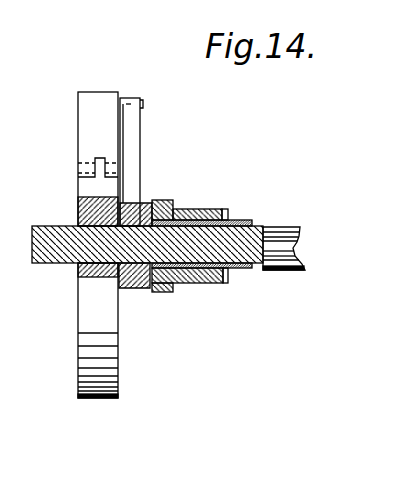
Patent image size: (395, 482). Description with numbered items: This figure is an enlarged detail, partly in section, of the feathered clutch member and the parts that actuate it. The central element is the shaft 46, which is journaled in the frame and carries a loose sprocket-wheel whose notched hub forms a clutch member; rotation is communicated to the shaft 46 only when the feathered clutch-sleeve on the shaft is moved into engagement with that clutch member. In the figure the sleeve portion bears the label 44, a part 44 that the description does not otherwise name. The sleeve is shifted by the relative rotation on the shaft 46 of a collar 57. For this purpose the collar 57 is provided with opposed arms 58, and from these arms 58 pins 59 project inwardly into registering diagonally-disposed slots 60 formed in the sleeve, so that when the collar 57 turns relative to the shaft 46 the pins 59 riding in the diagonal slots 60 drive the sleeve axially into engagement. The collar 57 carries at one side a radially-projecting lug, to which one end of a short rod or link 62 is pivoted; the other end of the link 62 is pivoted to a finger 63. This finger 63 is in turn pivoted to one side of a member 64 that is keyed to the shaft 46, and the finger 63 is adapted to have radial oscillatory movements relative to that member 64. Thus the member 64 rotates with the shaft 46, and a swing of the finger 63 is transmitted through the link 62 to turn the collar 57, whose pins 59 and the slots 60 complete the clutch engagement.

The shaft 44 is at (230, 216).
The shaft 46 is at (275, 271).
The collar 57 is at (133, 289).
The opposed arms 58 is at (159, 202).
The pins 59 is at (167, 208).
The diagonally-disposed slots 60 is at (217, 207).
The short rod or link 62 is at (134, 151).
The finger 63 is at (98, 159).
The member 64 is at (98, 330).